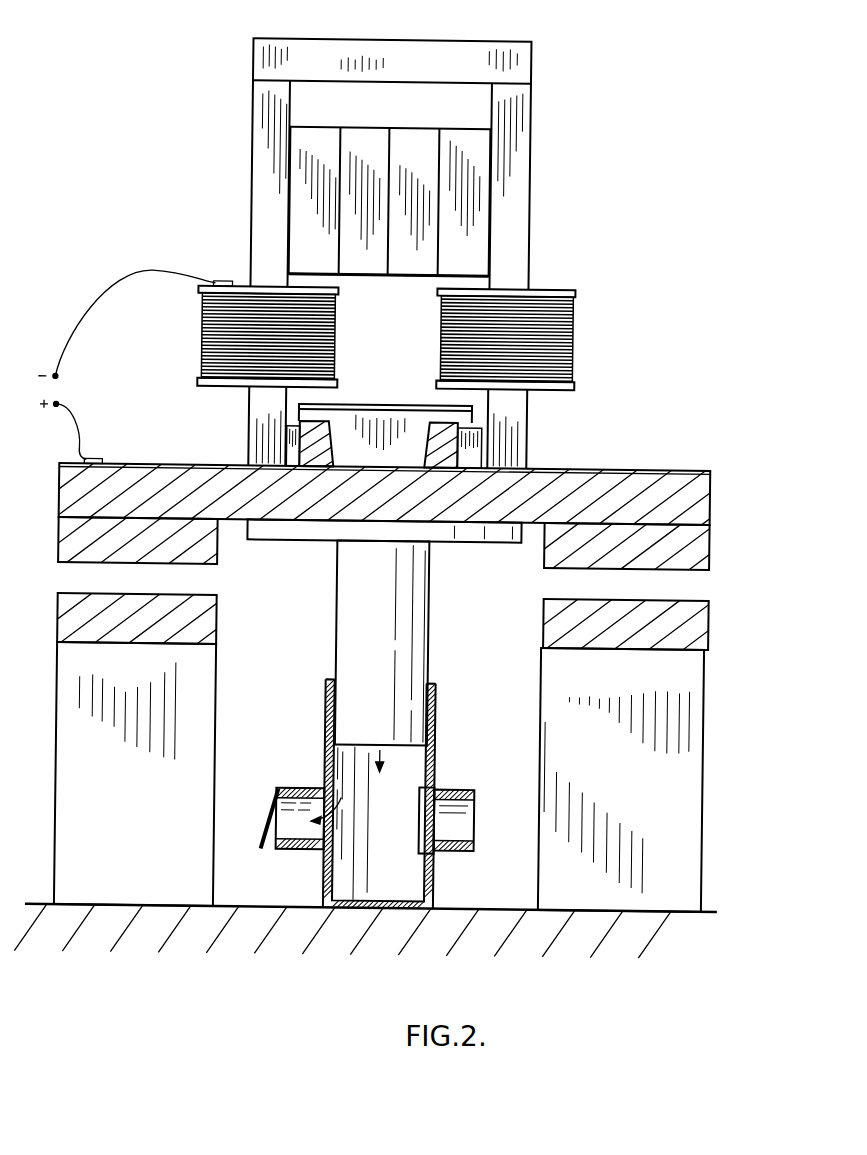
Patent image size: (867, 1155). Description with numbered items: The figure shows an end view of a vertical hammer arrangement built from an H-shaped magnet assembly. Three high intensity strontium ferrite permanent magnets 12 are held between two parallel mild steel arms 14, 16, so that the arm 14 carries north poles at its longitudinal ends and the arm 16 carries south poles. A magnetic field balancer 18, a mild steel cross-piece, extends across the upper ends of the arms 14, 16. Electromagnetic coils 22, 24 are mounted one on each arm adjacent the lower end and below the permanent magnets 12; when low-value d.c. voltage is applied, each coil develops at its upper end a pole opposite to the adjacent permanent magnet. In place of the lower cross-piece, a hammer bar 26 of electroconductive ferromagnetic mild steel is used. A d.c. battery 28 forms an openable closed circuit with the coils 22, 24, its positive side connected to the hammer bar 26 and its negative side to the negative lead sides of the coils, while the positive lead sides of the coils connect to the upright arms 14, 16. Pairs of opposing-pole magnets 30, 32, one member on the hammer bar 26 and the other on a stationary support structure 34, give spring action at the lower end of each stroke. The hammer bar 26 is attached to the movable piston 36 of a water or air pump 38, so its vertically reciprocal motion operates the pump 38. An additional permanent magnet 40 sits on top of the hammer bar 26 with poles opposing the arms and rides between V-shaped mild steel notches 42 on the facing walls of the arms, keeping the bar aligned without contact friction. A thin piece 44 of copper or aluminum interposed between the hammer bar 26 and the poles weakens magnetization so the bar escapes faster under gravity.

The permanent magnets 12 is at (300, 218).
The arm 14 is at (260, 238).
The arm 16 is at (517, 219).
The magnetic field balancer 18 is at (445, 51).
The electromagnetic coil 22 is at (200, 346).
The electromagnetic coil 24 is at (573, 351).
The hammer bar 26 is at (187, 472).
The d.c. battery 28 is at (62, 394).
The magnet pair 30 is at (220, 550).
The magnet pair 32 is at (546, 605).
The stationary support structure 34 is at (206, 767).
The movable piston 36 is at (355, 703).
The water or air pump 38 is at (445, 760).
The additional permanent magnet 40 is at (388, 405).
The V-shaped mild steel notches 42 is at (290, 522).
The thin piece of electrically-conducting non-magnetic material 44 is at (607, 467).